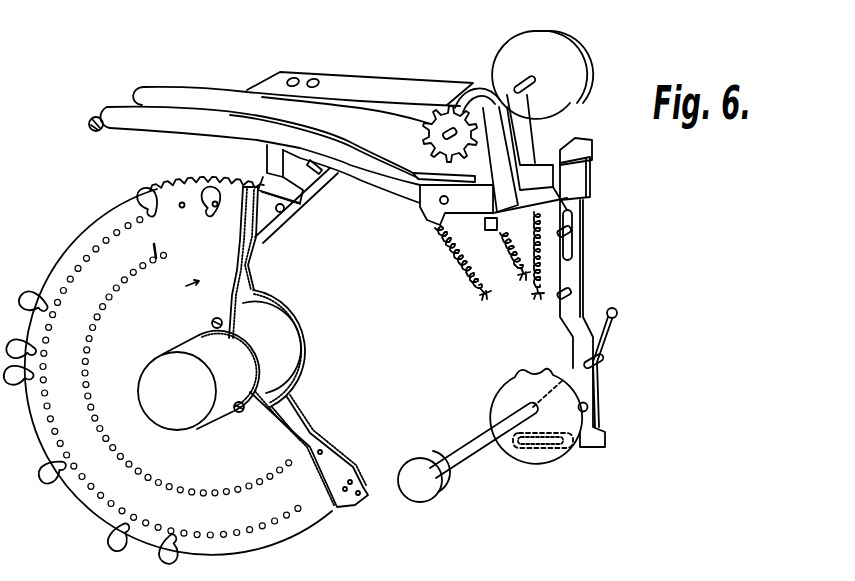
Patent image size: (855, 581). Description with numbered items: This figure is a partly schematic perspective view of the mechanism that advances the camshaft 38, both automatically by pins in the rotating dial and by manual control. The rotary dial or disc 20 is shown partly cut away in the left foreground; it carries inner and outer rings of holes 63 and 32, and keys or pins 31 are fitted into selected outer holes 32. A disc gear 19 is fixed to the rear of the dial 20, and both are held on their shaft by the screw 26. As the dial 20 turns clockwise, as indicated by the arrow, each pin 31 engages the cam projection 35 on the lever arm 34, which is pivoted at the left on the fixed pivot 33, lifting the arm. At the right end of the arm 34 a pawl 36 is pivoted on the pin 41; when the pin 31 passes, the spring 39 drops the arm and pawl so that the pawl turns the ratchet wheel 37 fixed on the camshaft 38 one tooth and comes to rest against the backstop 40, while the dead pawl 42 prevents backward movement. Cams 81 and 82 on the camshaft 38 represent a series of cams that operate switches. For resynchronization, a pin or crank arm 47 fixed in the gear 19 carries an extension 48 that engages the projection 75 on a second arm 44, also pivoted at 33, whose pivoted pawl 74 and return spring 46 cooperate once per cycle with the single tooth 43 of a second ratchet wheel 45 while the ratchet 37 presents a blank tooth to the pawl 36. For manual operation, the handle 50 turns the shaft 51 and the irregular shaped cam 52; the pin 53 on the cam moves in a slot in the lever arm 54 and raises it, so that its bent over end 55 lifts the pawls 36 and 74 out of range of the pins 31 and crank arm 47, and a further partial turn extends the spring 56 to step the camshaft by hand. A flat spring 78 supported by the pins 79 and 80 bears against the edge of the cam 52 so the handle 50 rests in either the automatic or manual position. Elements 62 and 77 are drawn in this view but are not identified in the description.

The disc gear 19 is at (260, 240).
The rotary dial 20 is at (62, 274).
The screw 26 is at (187, 432).
The keys or pins 31 is at (213, 205).
The outer ring of holes 32 is at (180, 207).
The fixed pivot 33 is at (90, 120).
The lever arm 34 is at (120, 107).
The cam projection 35 is at (267, 153).
The pawl 36 is at (423, 210).
The ratchet wheel 37 is at (421, 120).
The camshaft 38 is at (532, 80).
The spring 39 is at (456, 258).
The backstop 40 is at (488, 230).
The pin 41 is at (448, 200).
The dead pawl 42 is at (443, 80).
The single tooth 43 is at (518, 106).
The lever arm 44 is at (147, 92).
The second ratchet wheel 45 is at (487, 83).
The return spring 46 is at (510, 250).
The pin or crank arm 47 is at (303, 200).
The extension 48 is at (322, 172).
The manual control handle 50 is at (437, 497).
The shaft 51 is at (484, 452).
The irregular shaped cam 52 is at (541, 462).
The pin 53 is at (553, 449).
The lever arm 54 is at (584, 252).
The bent over end 55 is at (591, 181).
The spring 56 is at (536, 232).
The pin 62 is at (152, 250).
The inner ring of holes 63 is at (176, 256).
The pawl 74 is at (531, 137).
The projection 75 is at (312, 165).
The pins 77 is at (560, 237).
The flat spring 78 is at (601, 340).
The pin 79 is at (618, 314).
The pin 80 is at (604, 361).
The cam 81 is at (573, 42).
The cam 82 is at (593, 80).